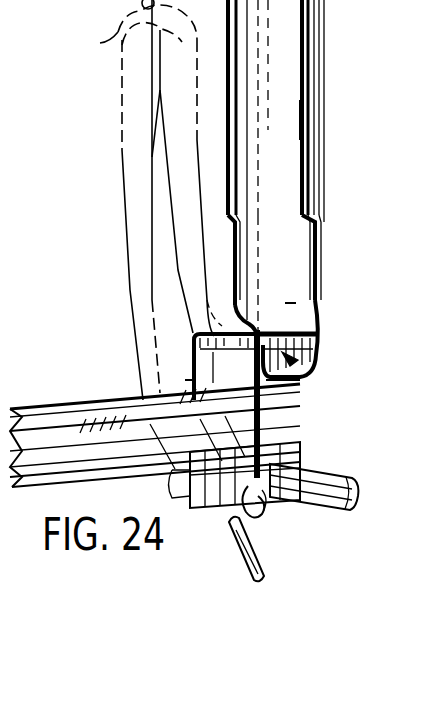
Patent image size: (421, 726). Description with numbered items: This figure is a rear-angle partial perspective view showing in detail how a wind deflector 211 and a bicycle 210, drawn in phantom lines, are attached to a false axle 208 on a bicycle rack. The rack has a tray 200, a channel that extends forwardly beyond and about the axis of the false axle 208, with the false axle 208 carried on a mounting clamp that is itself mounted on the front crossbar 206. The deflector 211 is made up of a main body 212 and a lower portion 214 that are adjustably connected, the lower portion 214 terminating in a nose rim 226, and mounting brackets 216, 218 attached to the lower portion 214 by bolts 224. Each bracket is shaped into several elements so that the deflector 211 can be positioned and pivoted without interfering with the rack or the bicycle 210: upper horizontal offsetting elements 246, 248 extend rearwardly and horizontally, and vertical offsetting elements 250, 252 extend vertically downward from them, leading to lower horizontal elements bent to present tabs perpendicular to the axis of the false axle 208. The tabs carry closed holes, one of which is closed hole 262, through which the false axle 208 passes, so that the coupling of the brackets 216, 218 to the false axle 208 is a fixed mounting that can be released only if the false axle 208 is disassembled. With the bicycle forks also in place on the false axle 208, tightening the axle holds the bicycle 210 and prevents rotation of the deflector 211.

The tray 200 is at (98, 404).
The front crossbar 206 is at (325, 470).
The false axle 208 is at (274, 504).
The bicycle 210 is at (118, 42).
The deflector 211 is at (328, 123).
The main body 212 is at (325, 52).
The lower portion 214 is at (318, 243).
The mounting bracket 216 is at (188, 350).
The mounting bracket 218 is at (312, 373).
The bolts 224 is at (312, 342).
The nose rim 226 is at (298, 382).
The upper horizontal offsetting element 246 is at (222, 332).
The upper horizontal offsetting element 248 is at (290, 306).
The vertical offsetting element 250 is at (185, 380).
The vertical offsetting element 252 is at (280, 431).
The closed hole 262 is at (265, 580).